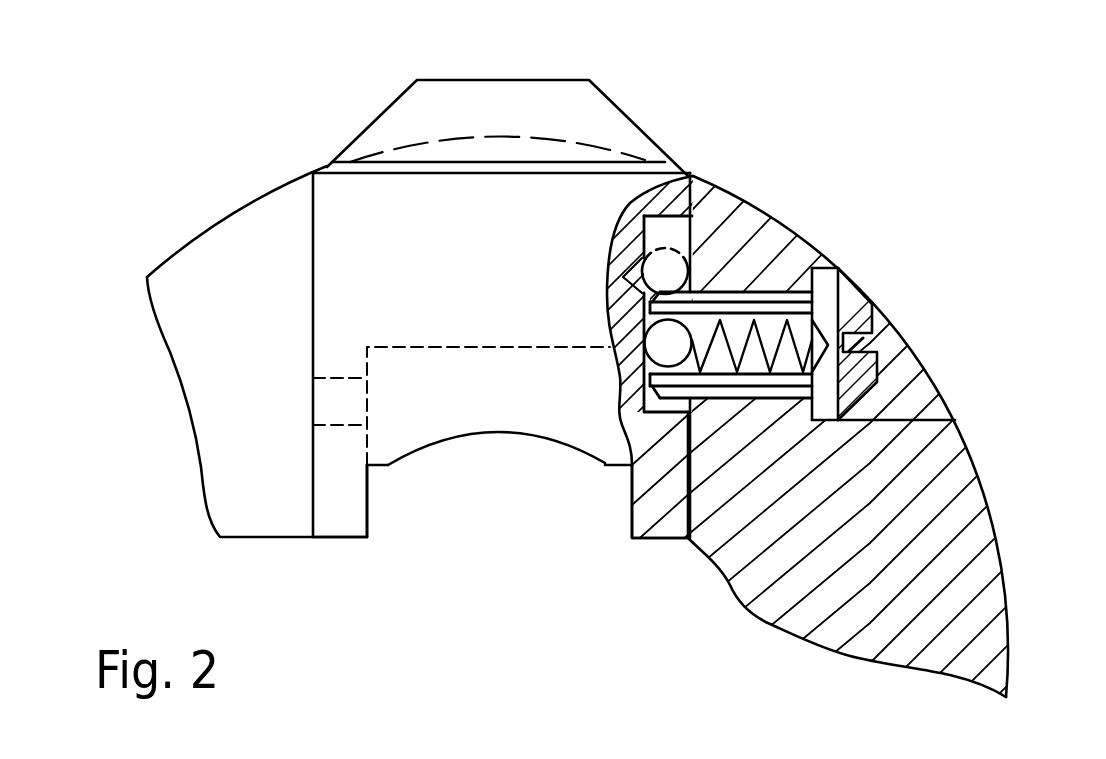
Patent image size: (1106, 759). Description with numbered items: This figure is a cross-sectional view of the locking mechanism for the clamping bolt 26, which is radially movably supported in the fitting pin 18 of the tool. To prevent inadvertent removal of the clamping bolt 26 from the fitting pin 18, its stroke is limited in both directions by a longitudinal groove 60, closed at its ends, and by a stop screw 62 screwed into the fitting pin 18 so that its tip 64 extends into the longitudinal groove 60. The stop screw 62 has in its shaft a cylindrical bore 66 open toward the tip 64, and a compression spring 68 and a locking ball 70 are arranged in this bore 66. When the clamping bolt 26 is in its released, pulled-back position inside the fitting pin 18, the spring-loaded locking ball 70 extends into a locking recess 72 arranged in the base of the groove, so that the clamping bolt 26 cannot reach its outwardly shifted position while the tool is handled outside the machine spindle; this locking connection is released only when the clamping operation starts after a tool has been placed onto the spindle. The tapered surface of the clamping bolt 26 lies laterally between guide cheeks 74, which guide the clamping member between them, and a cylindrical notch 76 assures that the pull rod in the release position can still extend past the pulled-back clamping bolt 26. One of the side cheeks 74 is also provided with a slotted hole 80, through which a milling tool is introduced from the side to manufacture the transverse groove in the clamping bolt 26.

The fitting pin 18 is at (775, 247).
The clamping bolt 26 is at (357, 220).
The longitudinal groove 60 is at (708, 207).
The stop screw 62 is at (826, 287).
The tip 64 is at (680, 400).
The cylindrical bore 66 is at (748, 366).
The compression spring 68 is at (815, 368).
The locking ball 70 is at (653, 340).
The locking recess 72 is at (683, 232).
The guide cheeks 74 is at (343, 513).
The cylindrical notch 76 is at (528, 438).
The slotted hole 80 is at (333, 378).